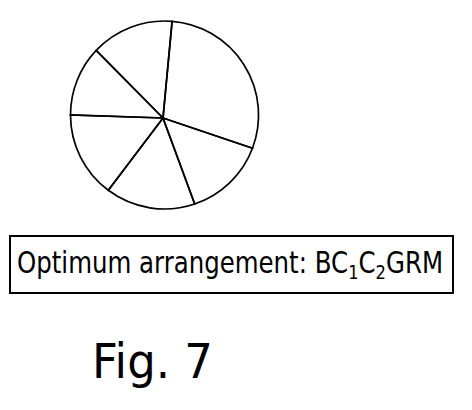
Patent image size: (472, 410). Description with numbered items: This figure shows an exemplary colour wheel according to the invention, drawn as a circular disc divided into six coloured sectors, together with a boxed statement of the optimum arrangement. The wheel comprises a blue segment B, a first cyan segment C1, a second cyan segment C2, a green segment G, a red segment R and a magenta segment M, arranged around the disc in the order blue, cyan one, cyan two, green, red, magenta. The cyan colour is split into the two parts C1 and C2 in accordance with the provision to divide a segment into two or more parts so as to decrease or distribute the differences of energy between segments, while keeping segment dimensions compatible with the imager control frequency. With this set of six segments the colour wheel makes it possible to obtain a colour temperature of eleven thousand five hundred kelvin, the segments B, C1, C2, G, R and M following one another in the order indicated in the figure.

The blue segment B is at (211, 84).
The first cyan segment C1 is at (208, 161).
The second cyan segment C2 is at (151, 163).
The green segment G is at (117, 152).
The red segment R is at (117, 84).
The magenta segment M is at (134, 69).